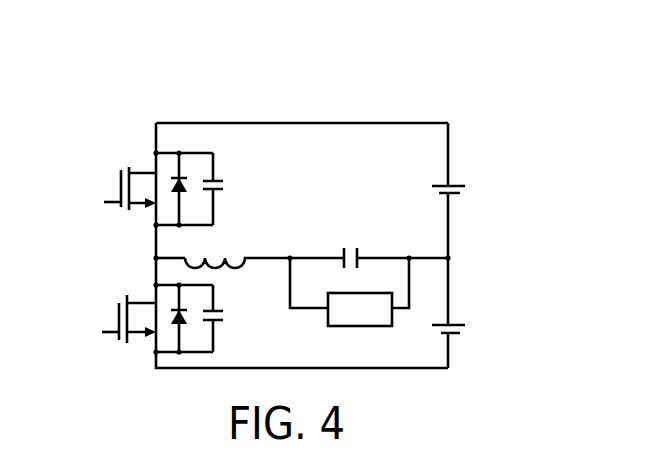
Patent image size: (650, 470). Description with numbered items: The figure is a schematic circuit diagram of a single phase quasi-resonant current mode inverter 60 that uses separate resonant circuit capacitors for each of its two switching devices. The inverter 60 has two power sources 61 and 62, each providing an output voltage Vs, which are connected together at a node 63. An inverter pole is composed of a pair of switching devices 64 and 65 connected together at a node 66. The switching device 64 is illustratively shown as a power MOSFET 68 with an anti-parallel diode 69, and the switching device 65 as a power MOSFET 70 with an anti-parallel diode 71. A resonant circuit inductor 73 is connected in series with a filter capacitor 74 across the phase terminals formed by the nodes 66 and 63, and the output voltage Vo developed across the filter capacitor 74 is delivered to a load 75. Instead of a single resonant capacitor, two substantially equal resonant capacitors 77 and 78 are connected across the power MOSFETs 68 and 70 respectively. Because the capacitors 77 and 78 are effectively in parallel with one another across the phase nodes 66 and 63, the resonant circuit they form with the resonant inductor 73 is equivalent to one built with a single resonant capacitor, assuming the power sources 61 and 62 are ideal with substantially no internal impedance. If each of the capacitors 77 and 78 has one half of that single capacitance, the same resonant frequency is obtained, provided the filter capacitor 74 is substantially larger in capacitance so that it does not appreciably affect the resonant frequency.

The single phase quasi-resonant current mode inverter 60 is at (313, 122).
The power source 61 is at (461, 185).
The power source 62 is at (462, 324).
The node 63 is at (455, 258).
The switching device 64 is at (146, 172).
The switching device 65 is at (124, 338).
The node 66 is at (156, 258).
The power MOSFET 68 is at (110, 195).
The anti-parallel diode 69 is at (181, 176).
The power MOSFET 70 is at (112, 322).
The anti-parallel diode 71 is at (184, 322).
The resonant circuit inductor 73 is at (226, 261).
The filter capacitor 74 is at (358, 252).
The load 75 is at (358, 326).
The resonant capacitor 77 is at (215, 180).
The resonant capacitor 78 is at (216, 310).